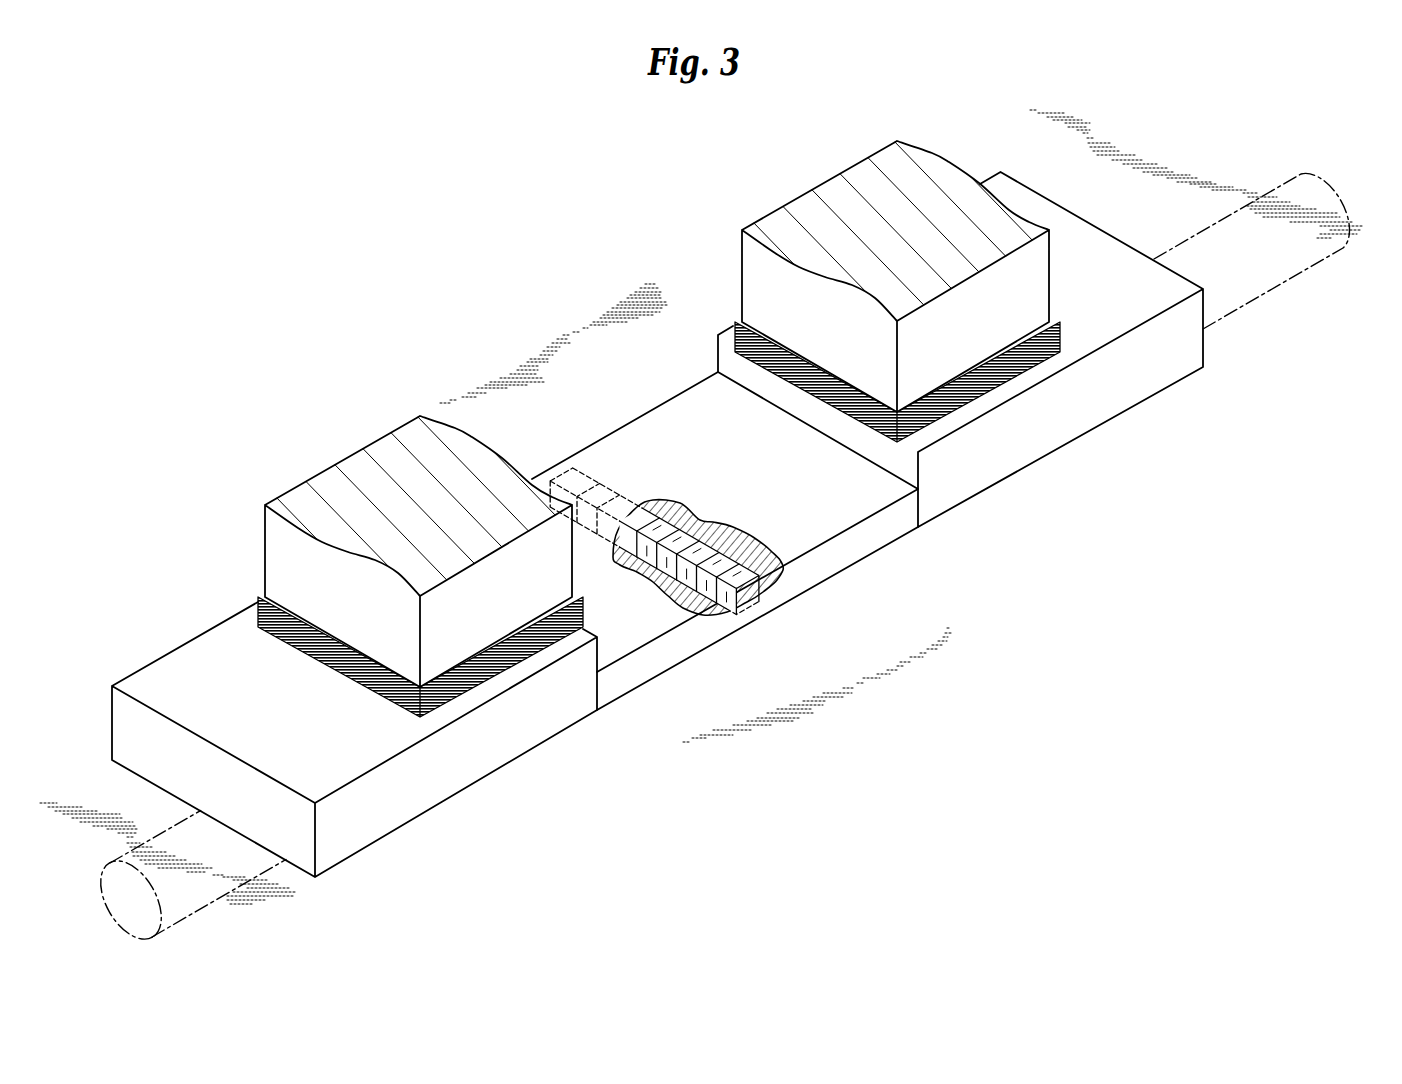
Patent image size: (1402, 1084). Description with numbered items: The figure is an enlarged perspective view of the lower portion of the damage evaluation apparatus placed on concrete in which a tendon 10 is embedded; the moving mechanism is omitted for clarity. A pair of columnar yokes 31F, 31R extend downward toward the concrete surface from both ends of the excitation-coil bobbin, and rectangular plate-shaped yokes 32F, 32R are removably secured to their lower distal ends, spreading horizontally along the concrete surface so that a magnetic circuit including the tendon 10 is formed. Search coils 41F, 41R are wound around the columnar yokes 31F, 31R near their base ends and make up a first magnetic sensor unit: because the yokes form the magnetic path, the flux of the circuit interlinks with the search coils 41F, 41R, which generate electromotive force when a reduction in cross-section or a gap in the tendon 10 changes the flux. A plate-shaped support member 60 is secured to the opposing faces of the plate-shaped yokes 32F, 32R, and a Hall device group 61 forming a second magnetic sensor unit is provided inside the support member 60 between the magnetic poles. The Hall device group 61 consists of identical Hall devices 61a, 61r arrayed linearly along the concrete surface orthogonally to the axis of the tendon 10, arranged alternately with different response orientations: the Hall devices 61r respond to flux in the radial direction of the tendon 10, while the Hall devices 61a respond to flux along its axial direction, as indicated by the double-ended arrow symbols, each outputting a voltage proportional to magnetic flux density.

The tendon 10 is at (173, 902).
The columnar yoke 31F is at (760, 280).
The columnar yoke 31R is at (282, 554).
The search coil 41F is at (740, 325).
The search coil 41R is at (260, 604).
The plate-shaped yoke 32F is at (1063, 410).
The plate-shaped yoke 32R is at (428, 781).
The support member 60 is at (648, 672).
The Hall device group 61 is at (719, 537).
The Hall device 61a is at (740, 543).
The Hall device 61r is at (698, 548).